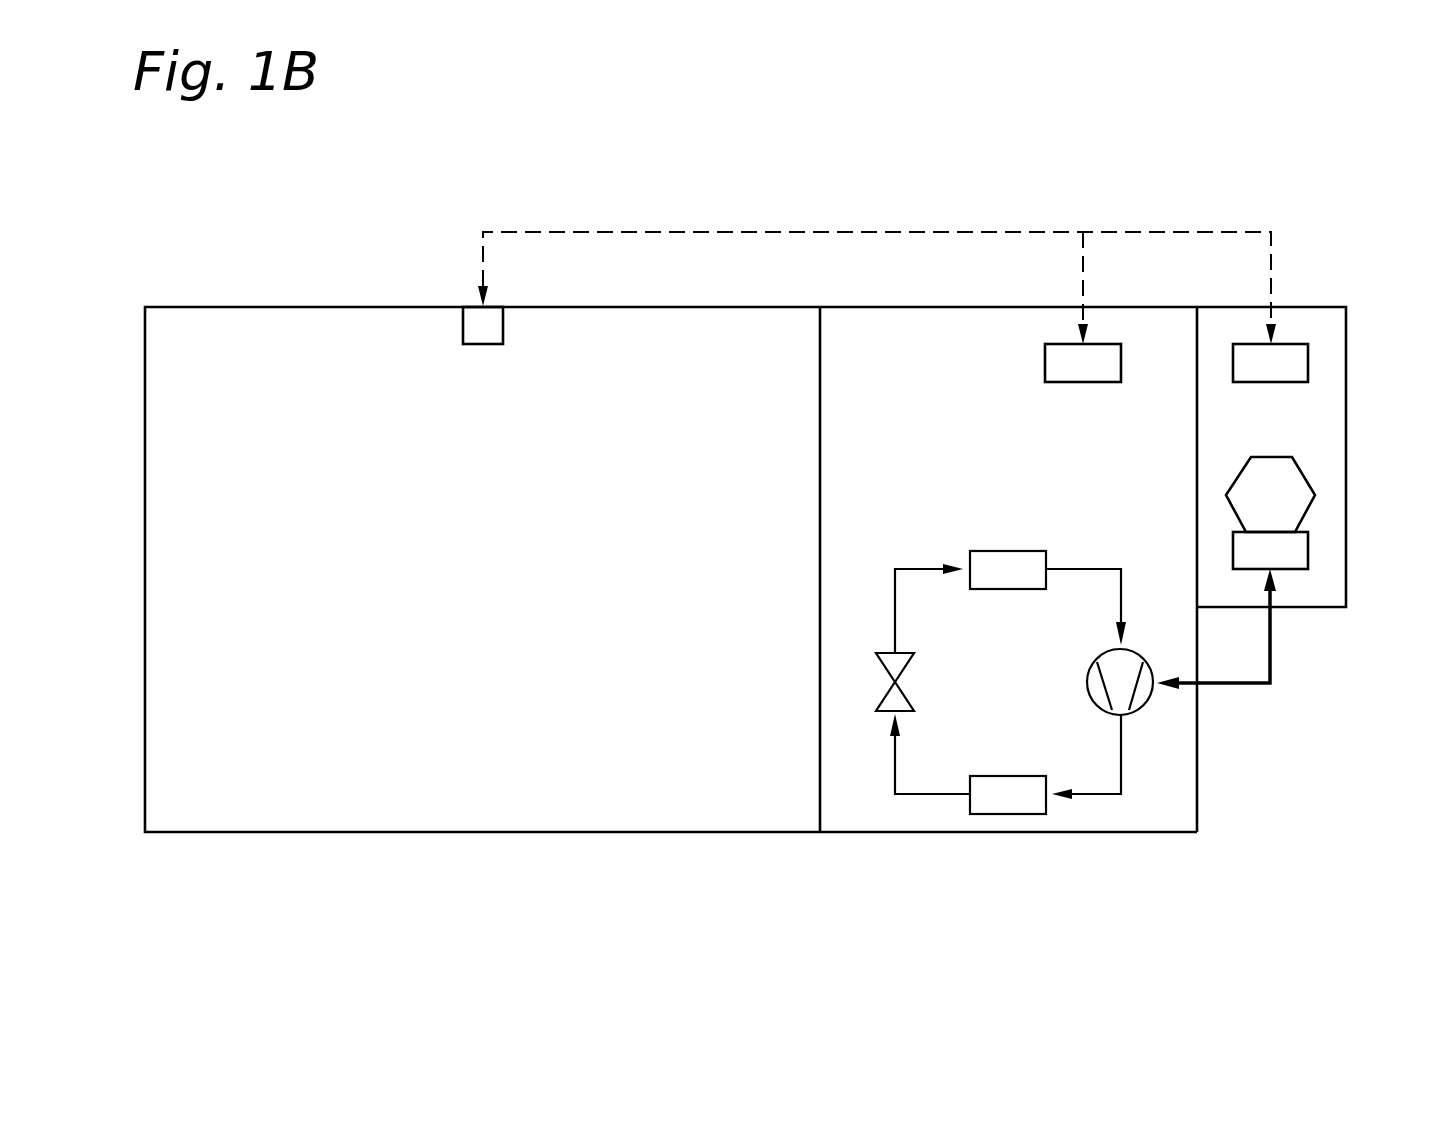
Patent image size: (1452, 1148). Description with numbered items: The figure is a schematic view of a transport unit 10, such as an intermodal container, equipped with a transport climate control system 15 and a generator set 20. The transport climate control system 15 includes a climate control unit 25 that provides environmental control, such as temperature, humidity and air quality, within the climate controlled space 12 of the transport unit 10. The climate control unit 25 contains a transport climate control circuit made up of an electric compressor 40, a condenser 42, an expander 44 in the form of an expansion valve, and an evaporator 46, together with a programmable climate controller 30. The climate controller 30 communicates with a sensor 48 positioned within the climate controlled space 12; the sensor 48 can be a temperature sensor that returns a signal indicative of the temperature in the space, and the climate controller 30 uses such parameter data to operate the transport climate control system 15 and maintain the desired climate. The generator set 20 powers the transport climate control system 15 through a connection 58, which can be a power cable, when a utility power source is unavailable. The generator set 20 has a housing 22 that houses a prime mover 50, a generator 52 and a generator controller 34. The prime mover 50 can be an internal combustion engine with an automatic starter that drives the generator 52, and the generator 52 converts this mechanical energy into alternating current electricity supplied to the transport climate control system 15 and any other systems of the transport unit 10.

The transport unit 10 is at (346, 237).
The climate controlled space 12 is at (320, 787).
The transport climate control system 15 is at (1028, 733).
The generator set 20 is at (1331, 574).
The housing 22 is at (1347, 587).
The climate control unit 25 is at (1163, 833).
The climate controller 30 is at (1063, 344).
The generator controller 34 is at (1287, 344).
The electric compressor 40 is at (1140, 712).
The condenser 42 is at (1000, 815).
The expander 44 is at (883, 712).
The evaporator 46 is at (990, 551).
The sensor 48 is at (463, 325).
The prime mover 50 is at (1302, 467).
The generator 52 is at (1309, 550).
The connection 58 is at (1248, 685).